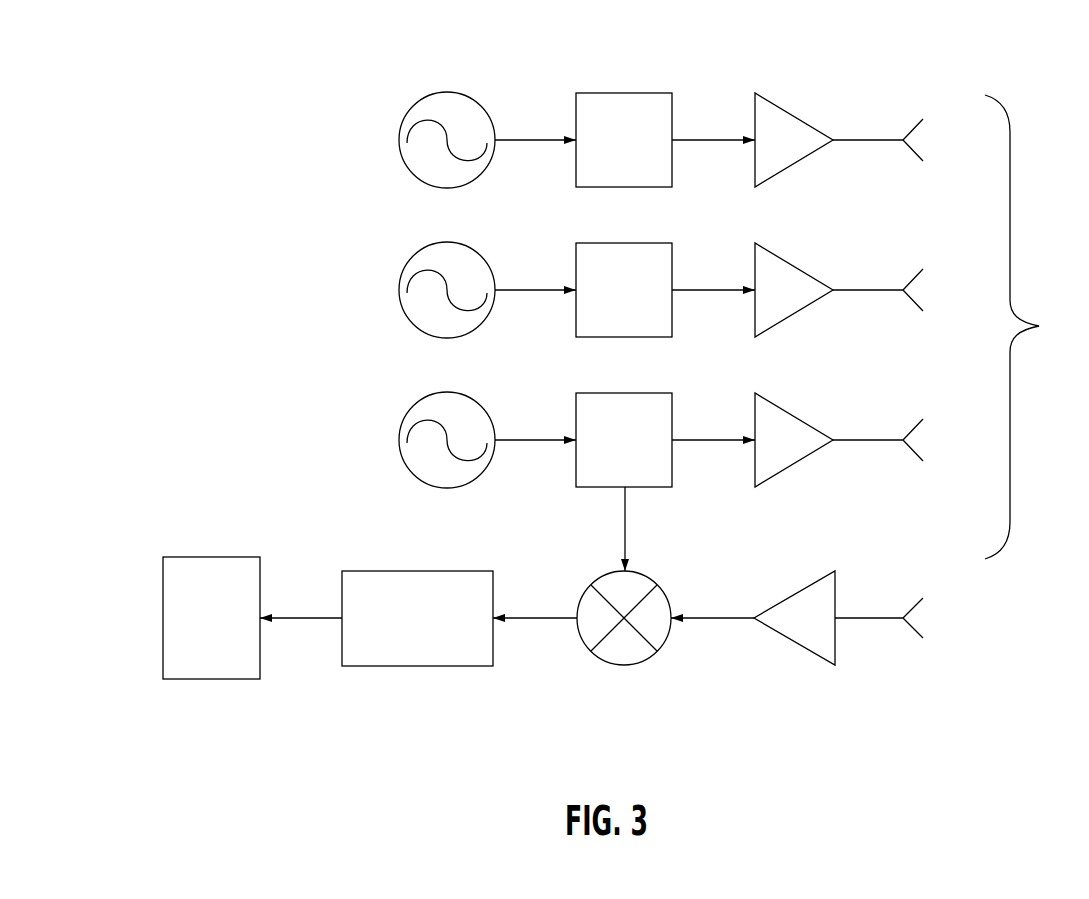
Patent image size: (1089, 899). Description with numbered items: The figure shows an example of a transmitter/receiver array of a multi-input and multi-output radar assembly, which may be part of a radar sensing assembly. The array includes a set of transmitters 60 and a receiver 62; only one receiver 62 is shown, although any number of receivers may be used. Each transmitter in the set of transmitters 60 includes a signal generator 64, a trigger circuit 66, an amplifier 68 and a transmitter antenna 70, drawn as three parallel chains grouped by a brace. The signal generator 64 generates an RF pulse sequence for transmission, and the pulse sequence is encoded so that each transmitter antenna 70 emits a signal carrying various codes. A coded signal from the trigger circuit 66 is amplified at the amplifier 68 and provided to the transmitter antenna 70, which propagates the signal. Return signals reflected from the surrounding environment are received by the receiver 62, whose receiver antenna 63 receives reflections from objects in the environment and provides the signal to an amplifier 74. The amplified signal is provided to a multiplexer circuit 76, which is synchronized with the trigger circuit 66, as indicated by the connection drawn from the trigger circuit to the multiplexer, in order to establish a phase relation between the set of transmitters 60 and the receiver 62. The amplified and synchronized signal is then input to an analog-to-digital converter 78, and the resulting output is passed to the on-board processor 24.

The on-board processor 24 is at (212, 679).
The set of transmitters 60 is at (738, 289).
The receiver 62 is at (853, 753).
The receiver antenna 63 is at (868, 620).
The signal generator 64 is at (447, 92).
The trigger circuit 66 is at (625, 93).
The amplifier 68 is at (778, 107).
The transmitter antenna 70 is at (868, 140).
The amplifier 74 is at (797, 643).
The multiplexer circuit 76 is at (626, 665).
The analog-to-digital converter 78 is at (417, 666).